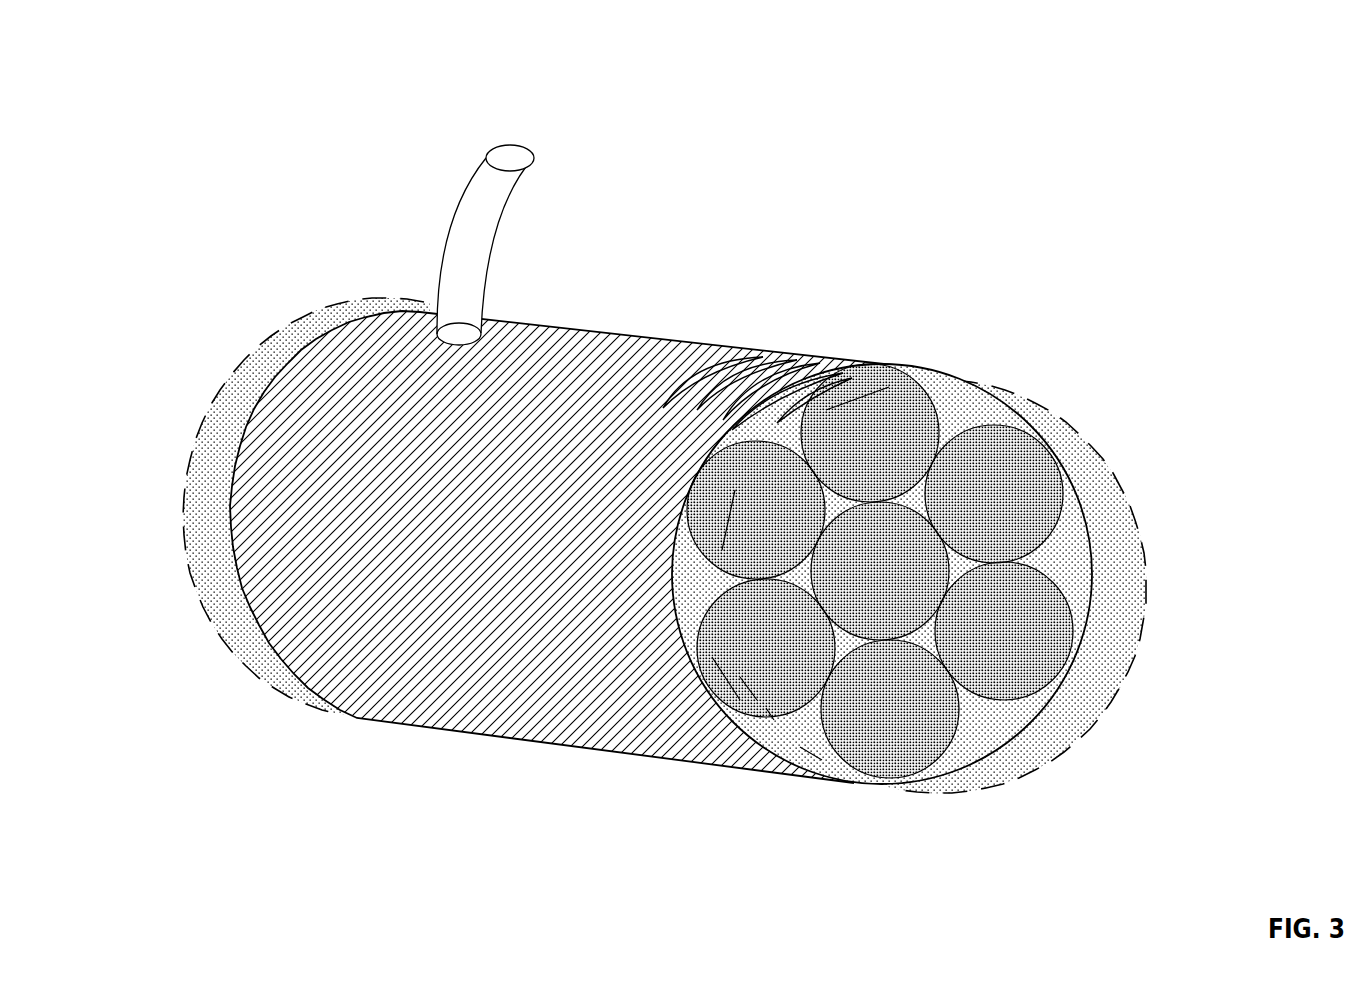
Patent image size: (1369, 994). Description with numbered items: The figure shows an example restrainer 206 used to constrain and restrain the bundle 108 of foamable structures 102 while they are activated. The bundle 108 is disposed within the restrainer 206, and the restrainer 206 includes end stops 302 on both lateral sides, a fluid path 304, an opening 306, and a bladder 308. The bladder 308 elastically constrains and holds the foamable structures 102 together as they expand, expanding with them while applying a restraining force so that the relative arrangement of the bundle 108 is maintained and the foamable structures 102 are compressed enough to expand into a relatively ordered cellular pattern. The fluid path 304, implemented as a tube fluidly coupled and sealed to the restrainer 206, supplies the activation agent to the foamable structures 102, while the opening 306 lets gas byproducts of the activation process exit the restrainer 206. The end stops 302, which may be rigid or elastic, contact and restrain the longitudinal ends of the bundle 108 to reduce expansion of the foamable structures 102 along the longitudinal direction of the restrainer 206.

The restrainer 206 is at (192, 60).
The end stops 302 is at (198, 524).
The fluid path 304 is at (498, 252).
The opening 306 is at (747, 350).
The bladder 308 is at (420, 707).
The foamable structures 102 is at (735, 690).
The bundle 108 is at (997, 440).